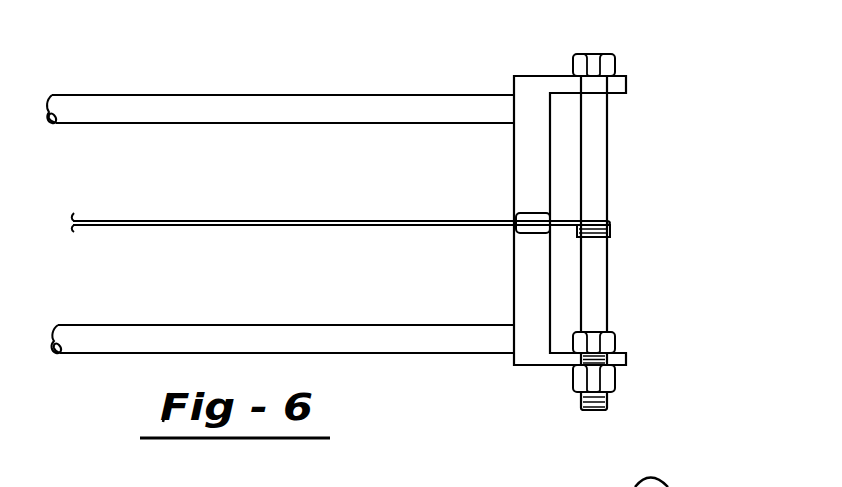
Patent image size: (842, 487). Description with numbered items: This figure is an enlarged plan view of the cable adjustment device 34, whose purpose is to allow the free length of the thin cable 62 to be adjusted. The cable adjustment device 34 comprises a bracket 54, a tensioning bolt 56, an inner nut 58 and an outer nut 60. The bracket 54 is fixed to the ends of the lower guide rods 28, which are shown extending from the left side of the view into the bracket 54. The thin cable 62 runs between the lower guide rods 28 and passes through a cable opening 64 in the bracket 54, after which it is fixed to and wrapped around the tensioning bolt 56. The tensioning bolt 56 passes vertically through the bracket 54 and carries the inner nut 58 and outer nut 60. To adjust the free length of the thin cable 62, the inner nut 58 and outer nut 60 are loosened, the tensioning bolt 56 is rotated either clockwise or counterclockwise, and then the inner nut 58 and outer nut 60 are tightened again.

The lower guide rods 28 is at (378, 112).
The cable adjustment device 34 is at (659, 71).
The bracket 54 is at (532, 348).
The tensioning bolt 56 is at (597, 273).
The inner nut 58 is at (613, 340).
The outer nut 60 is at (613, 380).
The thin cable 62 is at (297, 218).
The cable opening 64 is at (530, 232).